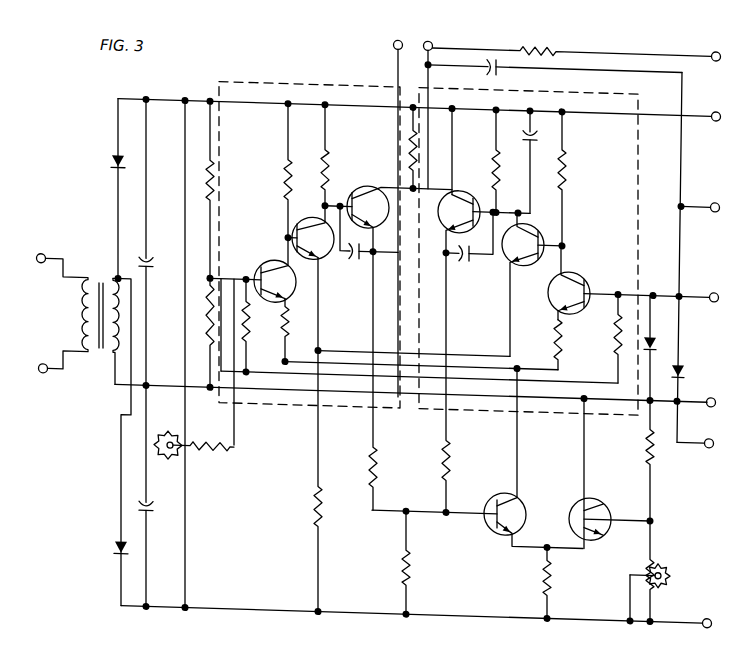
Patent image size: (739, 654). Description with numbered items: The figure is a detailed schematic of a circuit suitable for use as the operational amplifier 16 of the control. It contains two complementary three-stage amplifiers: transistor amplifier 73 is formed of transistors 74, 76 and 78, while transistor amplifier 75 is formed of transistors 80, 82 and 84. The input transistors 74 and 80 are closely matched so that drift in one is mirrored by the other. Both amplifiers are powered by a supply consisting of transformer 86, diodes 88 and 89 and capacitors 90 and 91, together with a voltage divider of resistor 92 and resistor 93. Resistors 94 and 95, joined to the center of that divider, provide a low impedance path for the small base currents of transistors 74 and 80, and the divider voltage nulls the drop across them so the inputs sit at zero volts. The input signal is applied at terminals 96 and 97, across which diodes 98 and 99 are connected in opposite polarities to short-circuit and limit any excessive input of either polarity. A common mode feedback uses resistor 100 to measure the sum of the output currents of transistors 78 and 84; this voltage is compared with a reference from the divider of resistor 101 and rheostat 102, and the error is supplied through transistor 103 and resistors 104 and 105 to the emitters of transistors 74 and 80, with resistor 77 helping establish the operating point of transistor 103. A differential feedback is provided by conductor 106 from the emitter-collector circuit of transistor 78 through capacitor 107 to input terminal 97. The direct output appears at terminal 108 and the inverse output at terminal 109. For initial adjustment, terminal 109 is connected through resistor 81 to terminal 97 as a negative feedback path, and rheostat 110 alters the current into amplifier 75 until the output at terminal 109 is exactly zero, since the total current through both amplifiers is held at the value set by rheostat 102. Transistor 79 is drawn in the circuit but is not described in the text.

The operational amplifier 16 is at (350, 606).
The transistor amplifier 73 is at (580, 420).
The transistor 74 is at (578, 266).
The transistor amplifier 75 is at (300, 405).
The transistor 76 is at (546, 207).
The resistor 77 is at (551, 563).
The transistor 78 is at (461, 186).
The transistor 79 is at (606, 494).
The transistor 80 is at (270, 262).
The resistor 81 is at (556, 33).
The transistor 82 is at (322, 210).
The transistor 84 is at (382, 183).
The transformer 86 is at (95, 262).
The diode 88 is at (113, 160).
The diode 89 is at (116, 547).
The capacitor 90 is at (150, 256).
The capacitor 91 is at (149, 510).
The resistor 92 is at (216, 186).
The resistor 93 is at (206, 342).
The resistor 94 is at (258, 327).
The resistor 95 is at (612, 332).
The input terminal 96 is at (706, 418).
The input terminal 97 is at (708, 272).
The diode 98 is at (684, 355).
The diode 99 is at (656, 328).
The resistor 100 is at (400, 556).
The resistor 101 is at (646, 430).
The rheostat 102 is at (688, 538).
The transistor 103 is at (492, 526).
The resistor 104 is at (554, 325).
The resistor 105 is at (289, 333).
The conductor 106 is at (679, 226).
The capacitor 107 is at (499, 51).
The output terminal 108 is at (393, 34).
The output terminal 109 is at (431, 35).
The rheostat 110 is at (175, 430).